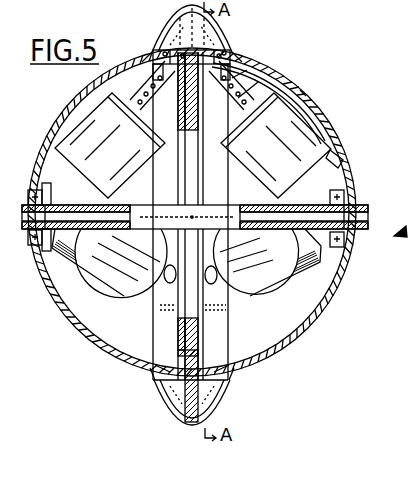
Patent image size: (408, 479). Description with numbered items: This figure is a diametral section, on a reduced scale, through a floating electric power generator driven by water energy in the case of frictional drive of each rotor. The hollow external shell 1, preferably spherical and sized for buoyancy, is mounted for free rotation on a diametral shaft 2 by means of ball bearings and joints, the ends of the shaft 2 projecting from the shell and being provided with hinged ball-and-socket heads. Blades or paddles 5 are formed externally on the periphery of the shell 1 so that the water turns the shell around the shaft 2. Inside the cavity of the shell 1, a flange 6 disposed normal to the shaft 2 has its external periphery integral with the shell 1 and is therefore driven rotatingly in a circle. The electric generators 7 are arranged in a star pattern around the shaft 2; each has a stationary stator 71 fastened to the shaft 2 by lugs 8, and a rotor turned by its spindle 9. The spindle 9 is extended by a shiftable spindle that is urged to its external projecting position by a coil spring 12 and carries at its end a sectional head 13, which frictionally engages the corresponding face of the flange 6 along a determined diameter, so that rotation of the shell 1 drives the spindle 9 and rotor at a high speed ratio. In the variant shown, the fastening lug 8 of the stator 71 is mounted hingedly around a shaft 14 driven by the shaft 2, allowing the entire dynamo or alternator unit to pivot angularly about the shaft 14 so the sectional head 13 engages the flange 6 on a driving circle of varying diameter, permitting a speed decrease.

The external shell 1 is at (334, 101).
The diametral shaft 2 is at (358, 205).
The blades or paddles 5 is at (175, 33).
The flange 6 is at (228, 50).
The electric generators 7 is at (95, 103).
The stator 71 is at (292, 100).
The lugs 8 is at (340, 158).
The spindle 9 is at (260, 82).
The coil spring 12 is at (240, 70).
The sectional head 13 is at (153, 52).
The shaft 14 is at (46, 146).